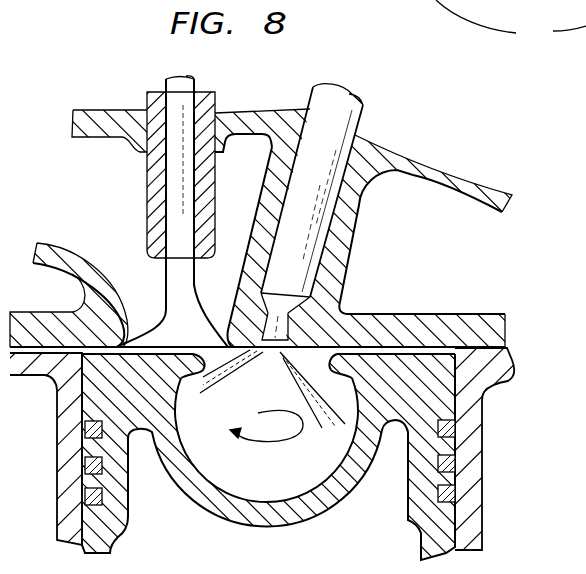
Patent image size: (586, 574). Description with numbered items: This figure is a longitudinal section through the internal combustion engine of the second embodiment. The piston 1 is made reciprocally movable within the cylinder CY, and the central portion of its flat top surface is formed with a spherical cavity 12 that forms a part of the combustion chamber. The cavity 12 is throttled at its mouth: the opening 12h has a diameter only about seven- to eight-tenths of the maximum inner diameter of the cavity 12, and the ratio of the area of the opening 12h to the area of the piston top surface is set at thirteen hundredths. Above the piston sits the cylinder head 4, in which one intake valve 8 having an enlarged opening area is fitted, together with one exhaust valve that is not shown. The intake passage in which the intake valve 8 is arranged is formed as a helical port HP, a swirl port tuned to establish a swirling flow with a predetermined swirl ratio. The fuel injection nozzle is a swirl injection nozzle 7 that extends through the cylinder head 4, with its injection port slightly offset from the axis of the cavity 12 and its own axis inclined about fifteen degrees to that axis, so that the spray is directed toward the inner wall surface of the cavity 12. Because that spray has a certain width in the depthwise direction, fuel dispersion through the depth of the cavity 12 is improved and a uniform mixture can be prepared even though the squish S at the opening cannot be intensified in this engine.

The piston 1 is at (425, 378).
The cylinder head 4 is at (451, 180).
The swirl injection nozzle 7 is at (305, 237).
The intake valve 8 is at (173, 310).
The cavity 12 is at (233, 474).
The opening 12h is at (334, 362).
The helical port HP is at (248, 152).
The squish S is at (211, 360).
The cylinder CY is at (503, 377).